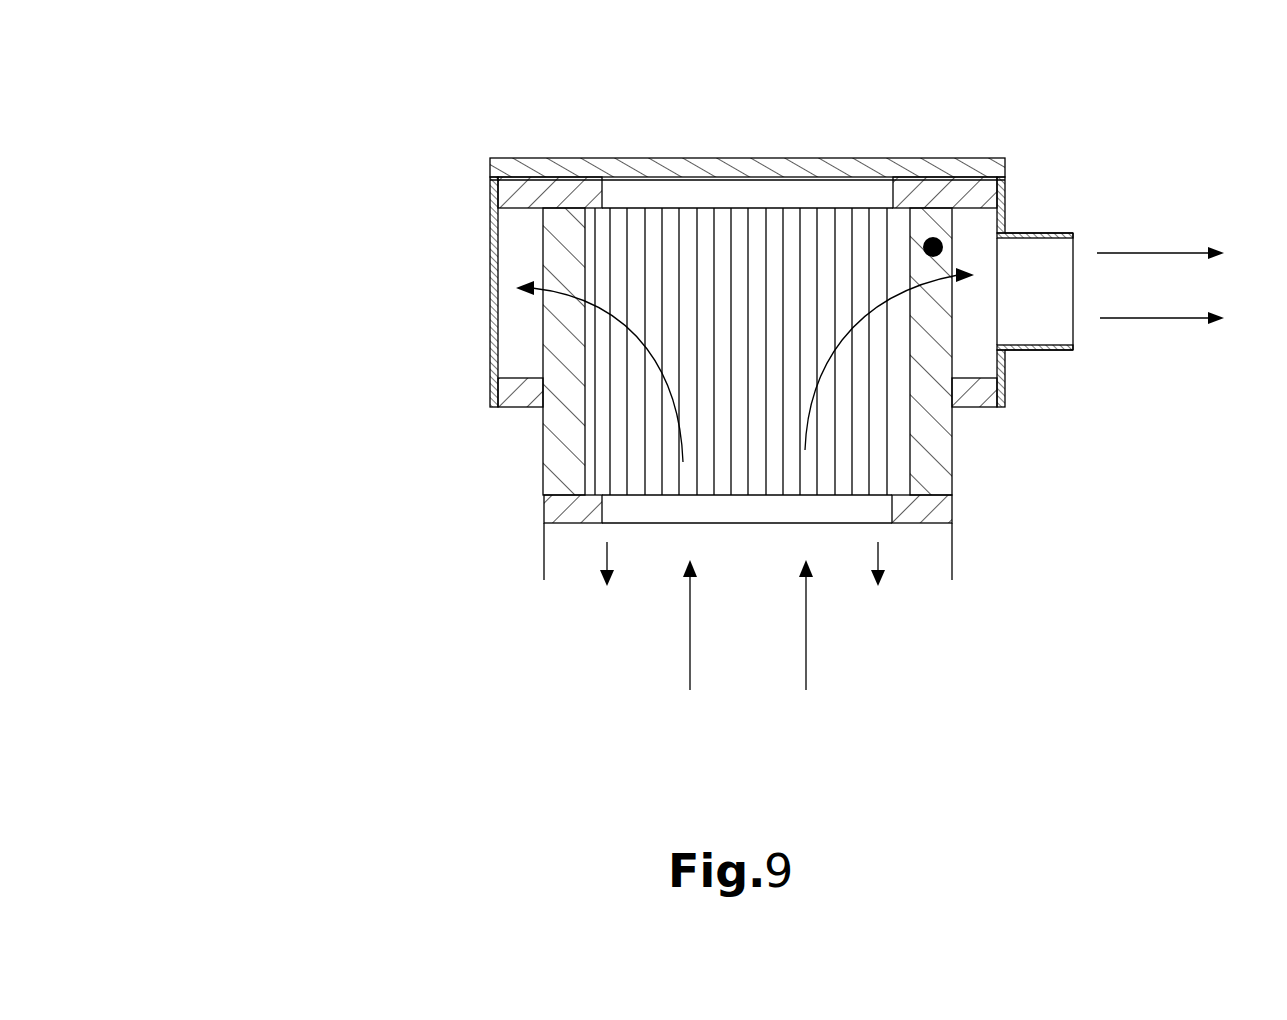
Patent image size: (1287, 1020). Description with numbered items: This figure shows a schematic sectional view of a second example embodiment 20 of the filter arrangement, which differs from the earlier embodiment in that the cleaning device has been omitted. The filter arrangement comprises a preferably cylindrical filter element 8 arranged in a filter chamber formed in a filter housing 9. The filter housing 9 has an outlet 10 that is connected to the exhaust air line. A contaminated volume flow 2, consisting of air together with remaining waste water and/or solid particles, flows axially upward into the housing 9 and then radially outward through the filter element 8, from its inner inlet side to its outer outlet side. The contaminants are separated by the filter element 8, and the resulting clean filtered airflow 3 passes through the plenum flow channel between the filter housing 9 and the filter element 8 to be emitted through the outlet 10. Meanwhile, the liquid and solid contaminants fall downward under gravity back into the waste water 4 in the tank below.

The second example embodiment 20 is at (693, 378).
The filter housing 9 is at (1007, 192).
The outlet 10 is at (1053, 233).
The filter element 8 is at (933, 247).
The clean filtered airflow 3 is at (1173, 313).
The waste water 4 is at (746, 599).
The contaminated volume flow 2 is at (748, 651).